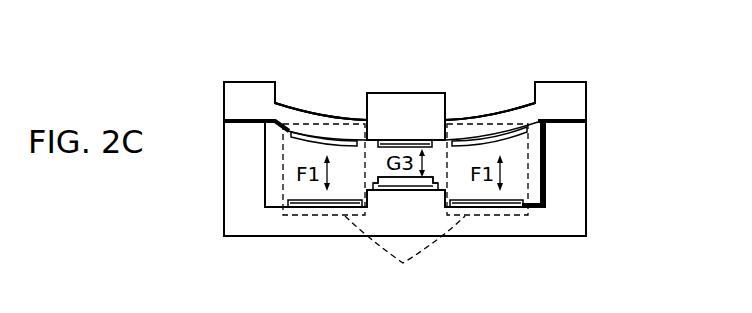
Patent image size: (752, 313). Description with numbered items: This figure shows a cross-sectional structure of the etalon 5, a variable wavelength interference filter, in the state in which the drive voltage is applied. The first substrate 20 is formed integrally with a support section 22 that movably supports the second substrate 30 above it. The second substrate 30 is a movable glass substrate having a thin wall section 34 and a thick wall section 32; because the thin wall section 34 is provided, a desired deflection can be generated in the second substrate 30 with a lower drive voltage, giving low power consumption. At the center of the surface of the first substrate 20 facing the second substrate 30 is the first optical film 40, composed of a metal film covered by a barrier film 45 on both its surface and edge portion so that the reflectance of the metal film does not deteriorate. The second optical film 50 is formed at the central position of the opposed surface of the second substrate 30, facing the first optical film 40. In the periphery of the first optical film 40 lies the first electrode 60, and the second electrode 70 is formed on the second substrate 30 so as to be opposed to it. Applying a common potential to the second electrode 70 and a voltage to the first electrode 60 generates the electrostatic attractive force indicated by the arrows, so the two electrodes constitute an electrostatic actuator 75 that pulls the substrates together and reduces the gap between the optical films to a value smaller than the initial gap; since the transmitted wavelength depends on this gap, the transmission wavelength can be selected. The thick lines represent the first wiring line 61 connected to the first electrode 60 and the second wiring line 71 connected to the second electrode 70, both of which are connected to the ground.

The etalon 5 is at (526, 40).
The first substrate 20 is at (292, 228).
The support section 22 is at (586, 178).
The second substrate 30 is at (436, 100).
The thick wall section 32 is at (417, 102).
The thin wall section 34 is at (317, 118).
The first optical film 40 is at (383, 182).
The barrier film 45 is at (437, 180).
The second optical film 50 is at (395, 141).
The first electrode 60 is at (336, 207).
The first wiring line 61 is at (540, 209).
The second electrode 70 is at (291, 133).
The second wiring line 71 is at (250, 124).
The electrostatic actuator 75 is at (403, 265).